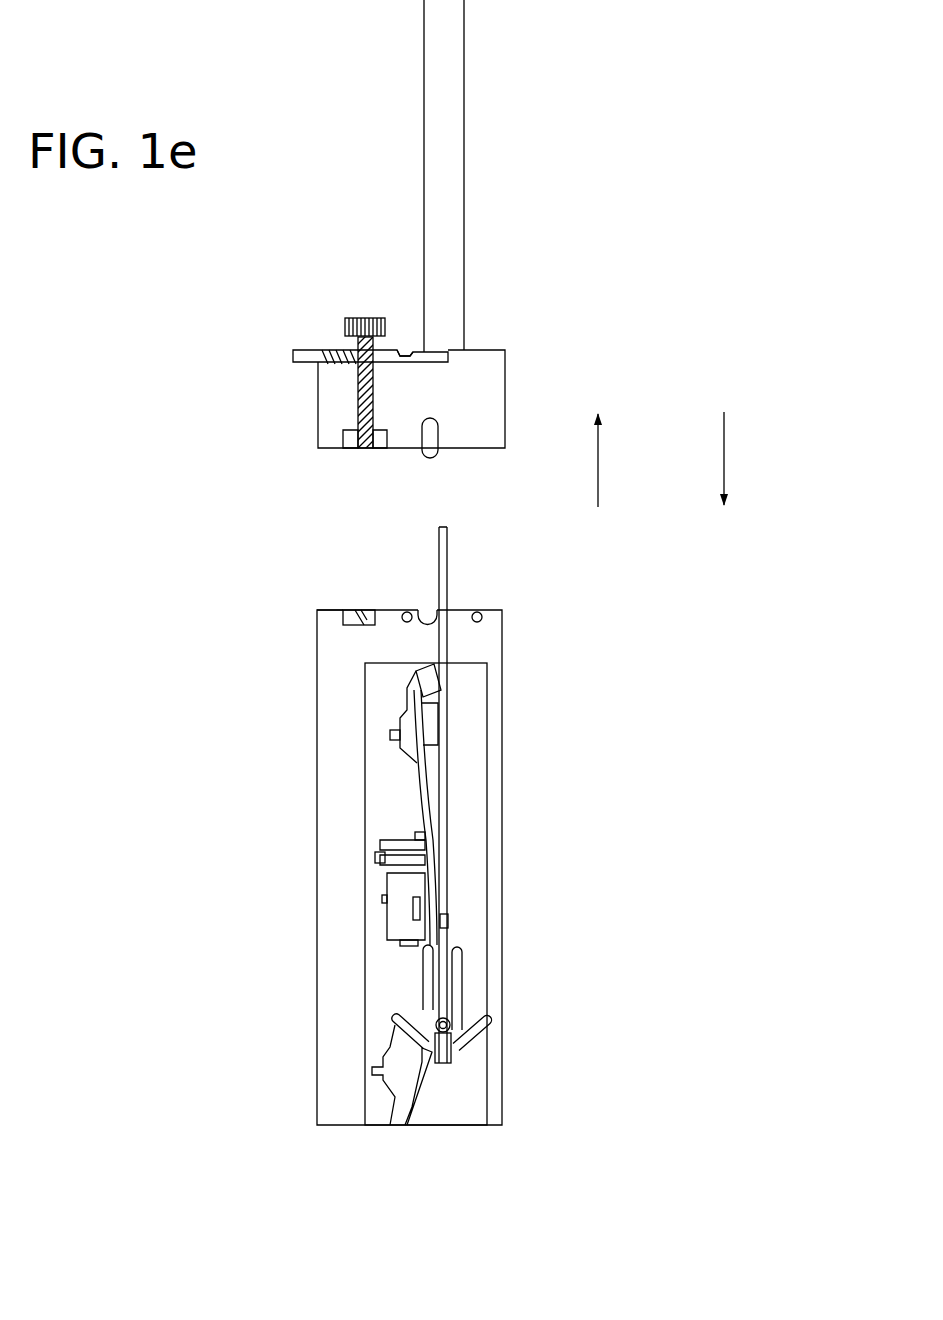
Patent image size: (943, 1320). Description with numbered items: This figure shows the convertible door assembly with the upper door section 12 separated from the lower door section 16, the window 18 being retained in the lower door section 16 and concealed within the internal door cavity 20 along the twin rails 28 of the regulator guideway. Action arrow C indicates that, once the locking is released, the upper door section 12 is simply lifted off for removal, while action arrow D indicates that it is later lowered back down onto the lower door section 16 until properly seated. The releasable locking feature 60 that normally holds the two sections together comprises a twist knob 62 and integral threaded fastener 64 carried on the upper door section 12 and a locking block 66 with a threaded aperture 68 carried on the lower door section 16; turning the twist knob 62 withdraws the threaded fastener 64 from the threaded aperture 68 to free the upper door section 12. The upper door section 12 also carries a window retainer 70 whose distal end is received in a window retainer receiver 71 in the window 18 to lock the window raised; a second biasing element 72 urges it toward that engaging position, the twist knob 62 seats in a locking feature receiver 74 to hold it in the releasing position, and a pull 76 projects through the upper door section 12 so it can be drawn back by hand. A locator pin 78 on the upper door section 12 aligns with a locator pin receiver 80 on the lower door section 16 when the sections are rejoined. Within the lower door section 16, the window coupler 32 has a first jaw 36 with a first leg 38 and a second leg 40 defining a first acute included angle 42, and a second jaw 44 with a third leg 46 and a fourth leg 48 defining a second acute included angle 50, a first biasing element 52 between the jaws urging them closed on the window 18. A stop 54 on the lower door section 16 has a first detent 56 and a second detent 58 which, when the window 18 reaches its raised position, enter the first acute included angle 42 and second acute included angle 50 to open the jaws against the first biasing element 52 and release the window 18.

The upper door section 12 is at (498, 362).
The lower door section 16 is at (502, 908).
The window 18 is at (447, 797).
The internal door cavity 20 is at (470, 708).
The twin rails 28 is at (420, 810).
The window coupler 32 is at (365, 1032).
The first jaw 36 is at (428, 1017).
The first leg 38 is at (422, 1012).
The second leg 40 is at (393, 1022).
The first acute included angle 42 is at (395, 1018).
The second jaw 44 is at (458, 1013).
The third leg 46 is at (458, 965).
The fourth leg 48 is at (485, 1027).
The second acute included angle 50 is at (458, 1030).
The first biasing element 52 is at (447, 1062).
The stop 54 is at (372, 643).
The first detent 56 is at (406, 612).
The second detent 58 is at (478, 612).
The releasable locking feature 60 is at (250, 452).
The twist knob 62 is at (362, 318).
The threaded fastener 64 is at (360, 392).
The locking block 66 is at (343, 620).
The threaded aperture 68 is at (363, 610).
The window retainer 70 is at (433, 350).
The window retainer receiver 71 is at (447, 925).
The second biasing element 72 is at (331, 352).
The locking feature receiver 74 is at (397, 350).
The pull 76 is at (305, 358).
The locator pin 78 is at (428, 455).
The locator pin receiver 80 is at (427, 617).
The action arrow C is at (598, 466).
The action arrow D is at (724, 460).